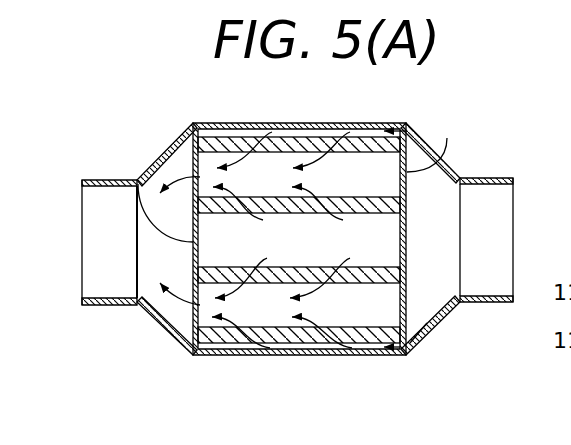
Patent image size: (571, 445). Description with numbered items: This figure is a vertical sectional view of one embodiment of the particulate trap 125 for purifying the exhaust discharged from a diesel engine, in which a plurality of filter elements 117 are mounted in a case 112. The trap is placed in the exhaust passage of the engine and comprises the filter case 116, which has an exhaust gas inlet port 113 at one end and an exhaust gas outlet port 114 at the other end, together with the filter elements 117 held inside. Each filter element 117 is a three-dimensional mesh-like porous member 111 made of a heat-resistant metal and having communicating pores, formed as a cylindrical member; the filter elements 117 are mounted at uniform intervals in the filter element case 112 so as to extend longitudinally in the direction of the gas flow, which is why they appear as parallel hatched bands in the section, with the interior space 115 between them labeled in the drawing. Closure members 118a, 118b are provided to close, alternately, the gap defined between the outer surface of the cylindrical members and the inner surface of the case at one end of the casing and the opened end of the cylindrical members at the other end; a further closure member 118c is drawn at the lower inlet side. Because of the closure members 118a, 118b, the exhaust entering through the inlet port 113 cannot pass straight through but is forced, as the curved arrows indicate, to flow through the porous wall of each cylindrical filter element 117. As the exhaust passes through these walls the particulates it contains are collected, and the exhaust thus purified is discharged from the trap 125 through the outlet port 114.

The three-dimensional mesh-like porous member 111 is at (365, 335).
The case 112 is at (452, 163).
The exhaust gas inlet port 113 is at (483, 282).
The exhaust gas outlet port 114 is at (108, 283).
The filter element 115 is at (386, 240).
The filter case 116 is at (118, 240).
The filter element 117 is at (381, 217).
The closure member 118a is at (140, 182).
The closure member 118b is at (446, 142).
The partition wall 118c is at (184, 342).
The particulate trap 125 is at (413, 290).